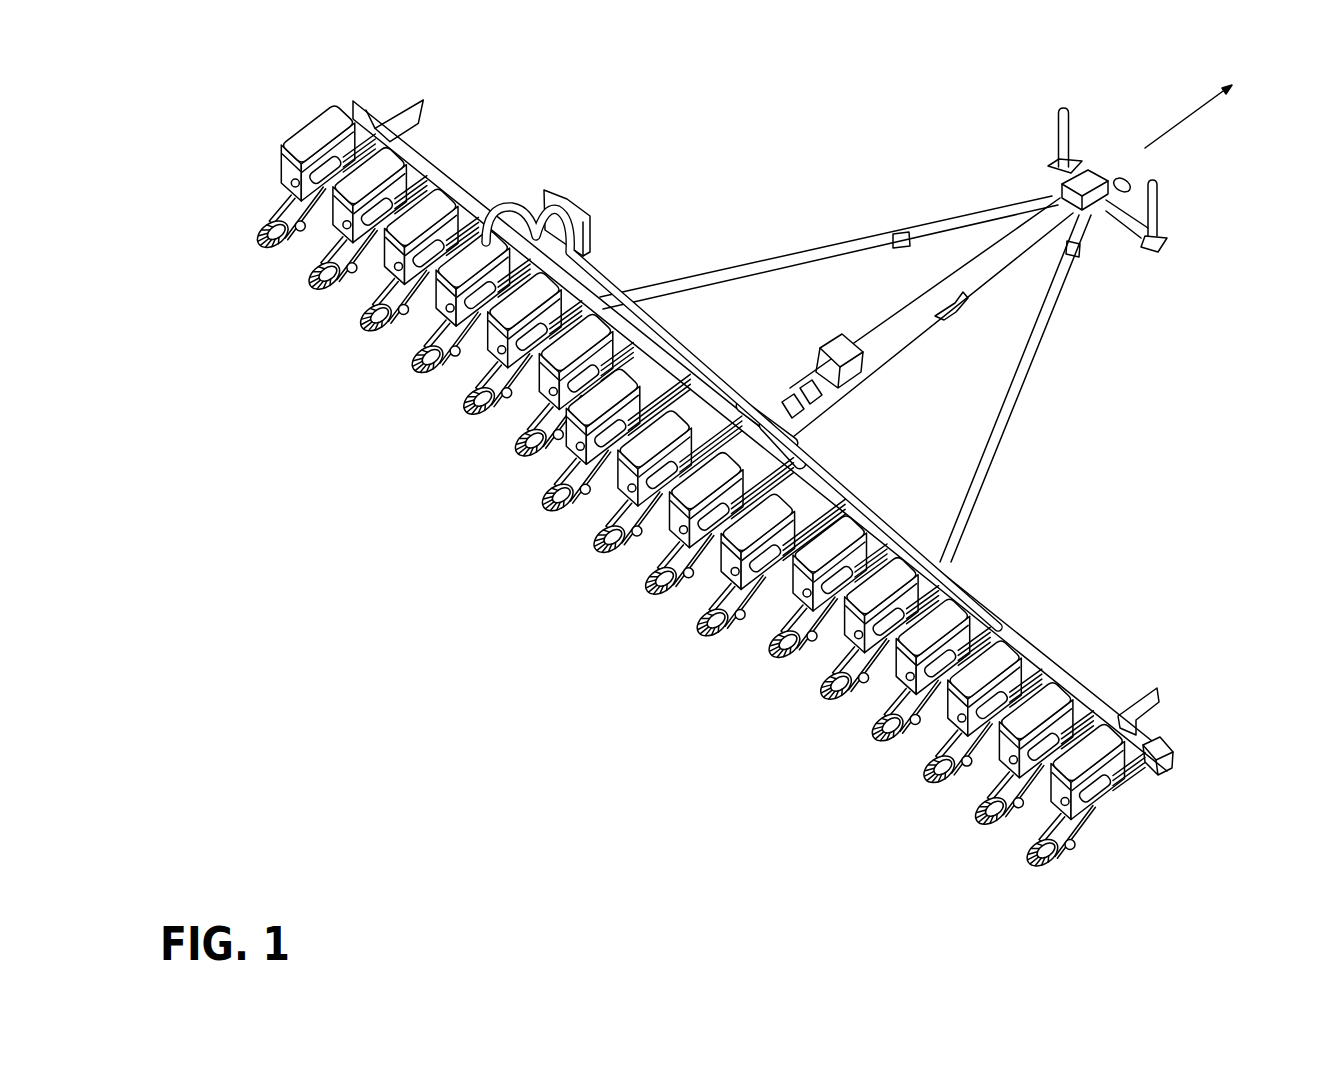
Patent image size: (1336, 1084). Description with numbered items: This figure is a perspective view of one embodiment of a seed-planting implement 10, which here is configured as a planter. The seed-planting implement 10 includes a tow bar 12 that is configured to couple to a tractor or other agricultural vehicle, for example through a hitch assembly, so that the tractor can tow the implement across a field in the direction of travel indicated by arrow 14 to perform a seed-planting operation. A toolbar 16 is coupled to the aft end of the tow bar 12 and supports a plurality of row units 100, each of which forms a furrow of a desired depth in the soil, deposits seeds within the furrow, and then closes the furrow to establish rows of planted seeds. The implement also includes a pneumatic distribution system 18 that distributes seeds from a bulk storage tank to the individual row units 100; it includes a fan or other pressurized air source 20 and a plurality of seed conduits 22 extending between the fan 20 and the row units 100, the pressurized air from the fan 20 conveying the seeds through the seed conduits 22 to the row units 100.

The seed-planting implement 10 is at (228, 120).
The tow bar 12 is at (980, 278).
The direction of travel 14 is at (1187, 120).
The toolbar 16 is at (1145, 742).
The pneumatic distribution system 18 is at (602, 244).
The fan 20 is at (568, 198).
The seed conduits 22 is at (718, 381).
The row unit 100 is at (268, 172).